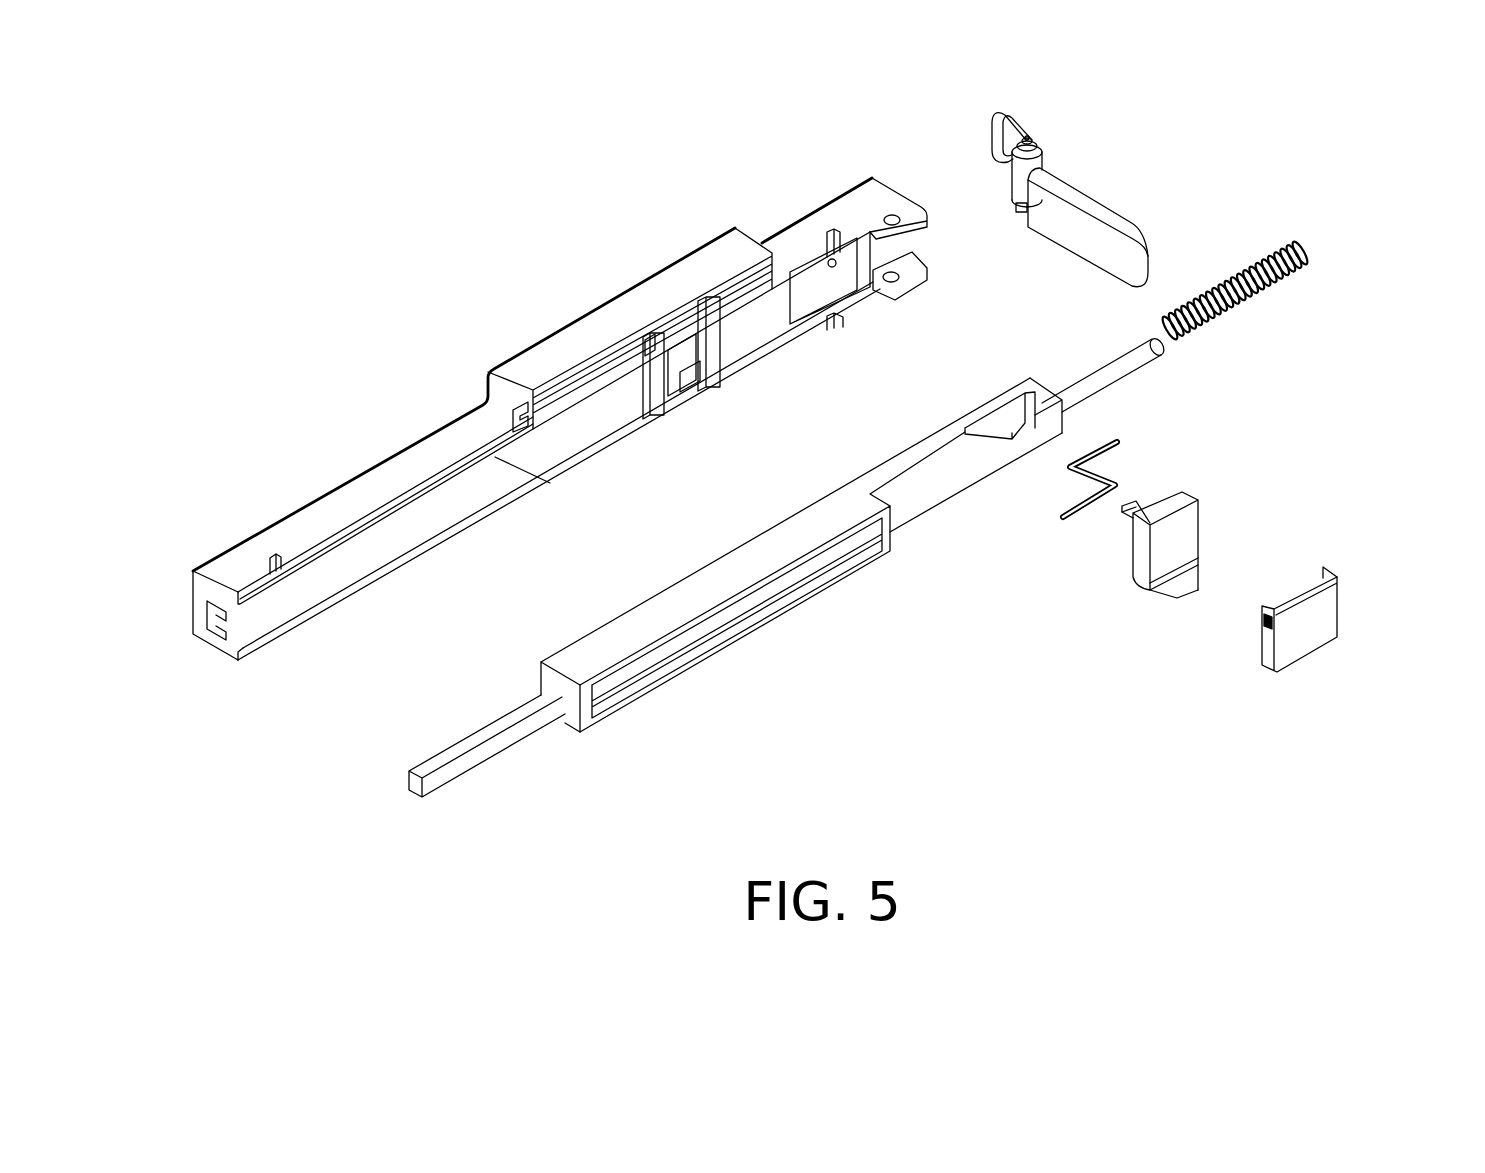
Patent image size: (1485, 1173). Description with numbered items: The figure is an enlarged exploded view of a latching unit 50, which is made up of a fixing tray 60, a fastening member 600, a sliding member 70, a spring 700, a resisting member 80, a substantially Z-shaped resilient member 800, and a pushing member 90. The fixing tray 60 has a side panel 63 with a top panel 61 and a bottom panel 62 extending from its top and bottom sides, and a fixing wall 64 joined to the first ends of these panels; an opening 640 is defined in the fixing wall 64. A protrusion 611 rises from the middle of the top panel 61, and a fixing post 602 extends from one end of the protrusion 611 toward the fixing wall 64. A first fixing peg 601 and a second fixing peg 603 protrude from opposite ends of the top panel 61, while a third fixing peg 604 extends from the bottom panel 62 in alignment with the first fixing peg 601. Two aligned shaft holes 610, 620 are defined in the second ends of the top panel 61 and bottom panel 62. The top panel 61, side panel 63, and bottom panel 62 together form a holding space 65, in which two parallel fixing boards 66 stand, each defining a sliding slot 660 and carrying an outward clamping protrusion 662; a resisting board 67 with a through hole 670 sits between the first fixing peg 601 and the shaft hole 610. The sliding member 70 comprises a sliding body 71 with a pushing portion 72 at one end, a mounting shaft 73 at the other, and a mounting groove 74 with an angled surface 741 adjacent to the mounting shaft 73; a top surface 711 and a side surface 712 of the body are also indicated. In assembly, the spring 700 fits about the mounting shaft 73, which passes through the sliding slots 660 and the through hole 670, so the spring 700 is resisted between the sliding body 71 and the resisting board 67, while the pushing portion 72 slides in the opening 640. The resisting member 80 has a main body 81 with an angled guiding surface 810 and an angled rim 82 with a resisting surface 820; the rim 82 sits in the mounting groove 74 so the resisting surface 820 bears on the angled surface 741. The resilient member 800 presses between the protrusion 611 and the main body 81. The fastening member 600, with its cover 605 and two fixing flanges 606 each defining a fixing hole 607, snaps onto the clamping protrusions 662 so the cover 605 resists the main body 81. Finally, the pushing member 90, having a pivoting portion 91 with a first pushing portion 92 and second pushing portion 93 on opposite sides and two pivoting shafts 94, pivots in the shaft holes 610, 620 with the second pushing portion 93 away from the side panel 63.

The latching unit 50 is at (408, 206).
The fixing tray 60 is at (228, 521).
The top panel 61 is at (398, 473).
The bottom panel 62 is at (316, 620).
The side panel 63 is at (560, 403).
The fixing wall 64 is at (202, 607).
The opening 640 is at (223, 632).
The holding space 65 is at (452, 525).
The fixing boards 66 is at (710, 340).
The resisting board 67 is at (868, 295).
The first fixing peg 601 is at (838, 236).
The fixing post 602 is at (480, 394).
The second fixing peg 603 is at (272, 560).
The third fixing peg 604 is at (830, 327).
The shaft hole 610 is at (893, 216).
The protrusion 611 is at (672, 283).
The shaft hole 620 is at (890, 277).
The sliding slot 660 is at (622, 395).
The clamping protrusion 662 is at (651, 338).
The through hole 670 is at (830, 260).
The sliding member 70 is at (587, 750).
The sliding body 71 is at (800, 555).
The pushing portion 72 is at (490, 752).
The mounting shaft 73 is at (1160, 350).
The mounting groove 74 is at (1005, 395).
The top surface 711 is at (915, 446).
The side surface 712 is at (940, 482).
The angled surface 741 is at (975, 418).
The spring 700 is at (1304, 257).
The resisting member 80 is at (1252, 457).
The main body 81 is at (1185, 543).
The angled rim 82 is at (1128, 508).
The resilient member 800 is at (1117, 442).
The angled guiding surface 810 is at (1175, 596).
The resisting surface 820 is at (1130, 520).
The pushing member 90 is at (1127, 206).
The pivoting portion 91 is at (1014, 185).
The first pushing portion 92 is at (1003, 135).
The second pushing portion 93 is at (1140, 228).
The pivoting shafts 94 is at (1037, 137).
The fastening member 600 is at (1410, 540).
The cover 605 is at (1320, 620).
The fixing flanges 606 is at (1325, 573).
The fixing hole 607 is at (1262, 623).